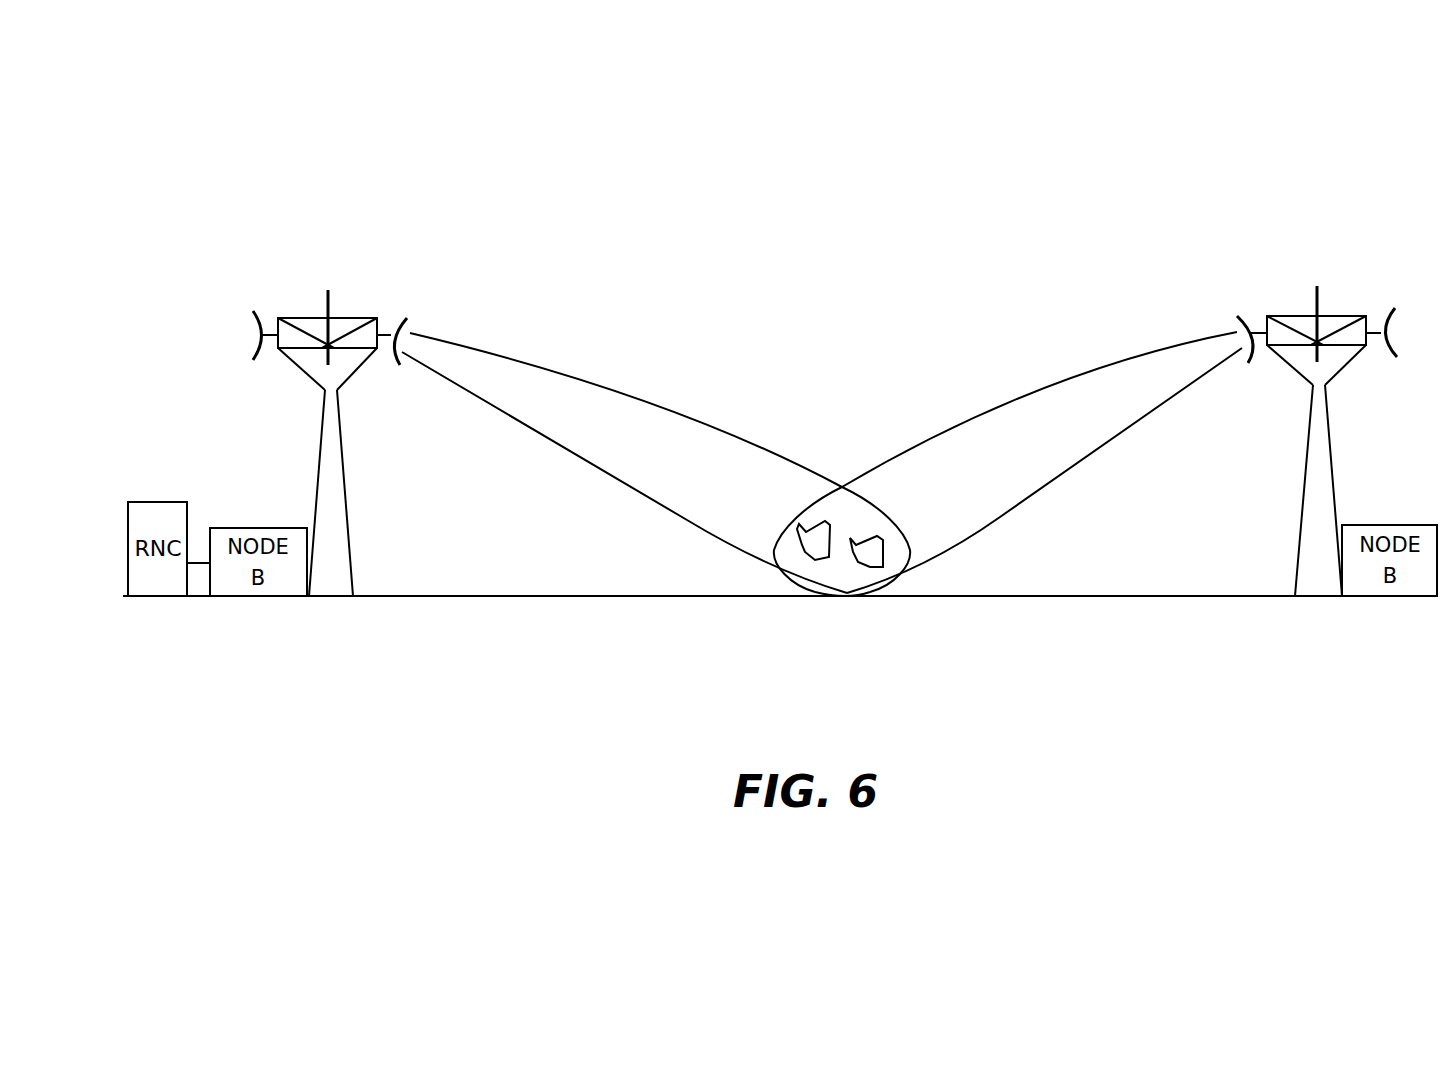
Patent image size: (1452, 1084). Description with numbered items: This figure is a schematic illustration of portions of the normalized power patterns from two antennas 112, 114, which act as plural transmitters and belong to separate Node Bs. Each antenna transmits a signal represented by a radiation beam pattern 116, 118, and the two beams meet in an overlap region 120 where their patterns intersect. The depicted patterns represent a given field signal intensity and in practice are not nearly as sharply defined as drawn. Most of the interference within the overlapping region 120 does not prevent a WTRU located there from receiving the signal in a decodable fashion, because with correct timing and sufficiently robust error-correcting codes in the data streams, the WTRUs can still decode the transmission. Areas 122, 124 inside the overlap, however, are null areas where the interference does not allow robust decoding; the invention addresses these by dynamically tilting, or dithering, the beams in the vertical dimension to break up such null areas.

The antenna 112 is at (383, 337).
The antenna 114 is at (1262, 333).
The radiation beam pattern 116 is at (648, 402).
The radiation beam pattern 118 is at (1040, 390).
The overlap region 120 is at (842, 578).
The null area 122 is at (801, 556).
The null area 124 is at (877, 567).